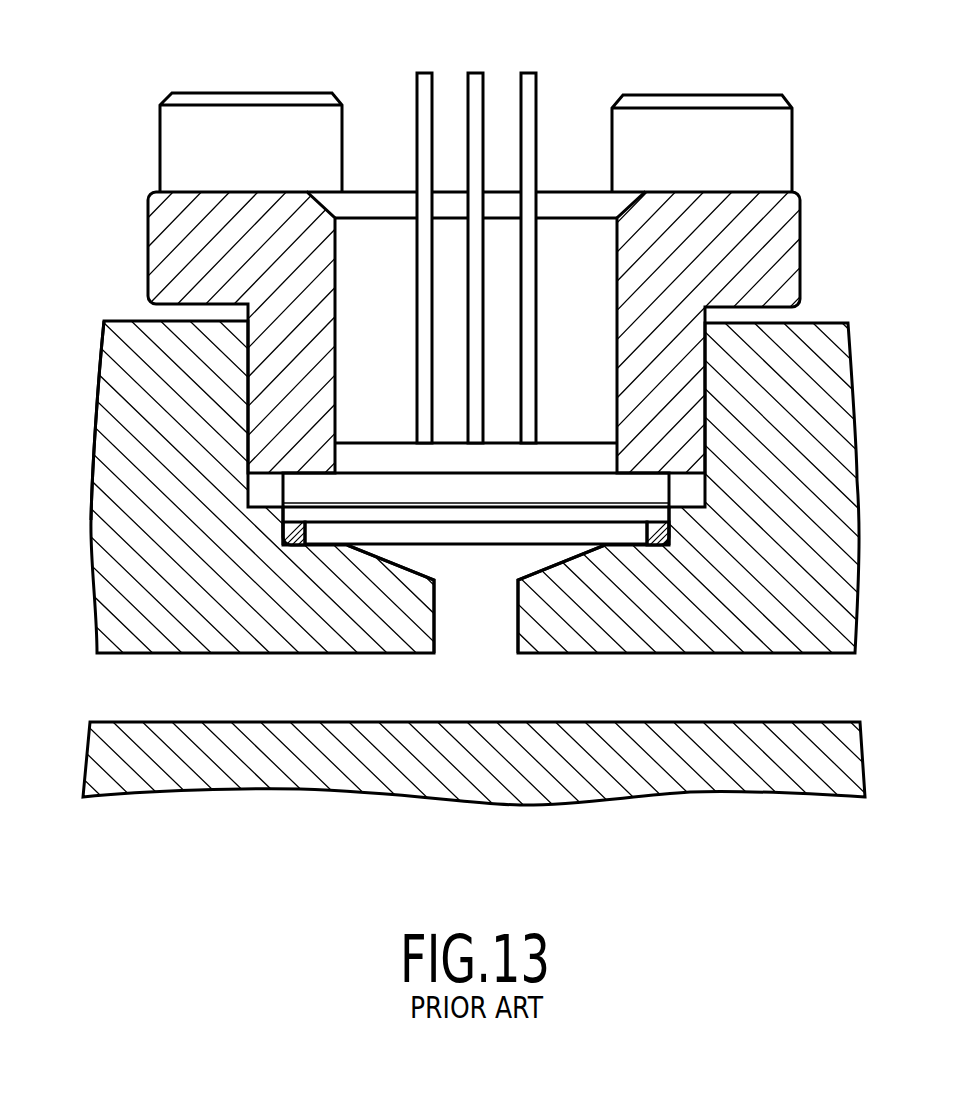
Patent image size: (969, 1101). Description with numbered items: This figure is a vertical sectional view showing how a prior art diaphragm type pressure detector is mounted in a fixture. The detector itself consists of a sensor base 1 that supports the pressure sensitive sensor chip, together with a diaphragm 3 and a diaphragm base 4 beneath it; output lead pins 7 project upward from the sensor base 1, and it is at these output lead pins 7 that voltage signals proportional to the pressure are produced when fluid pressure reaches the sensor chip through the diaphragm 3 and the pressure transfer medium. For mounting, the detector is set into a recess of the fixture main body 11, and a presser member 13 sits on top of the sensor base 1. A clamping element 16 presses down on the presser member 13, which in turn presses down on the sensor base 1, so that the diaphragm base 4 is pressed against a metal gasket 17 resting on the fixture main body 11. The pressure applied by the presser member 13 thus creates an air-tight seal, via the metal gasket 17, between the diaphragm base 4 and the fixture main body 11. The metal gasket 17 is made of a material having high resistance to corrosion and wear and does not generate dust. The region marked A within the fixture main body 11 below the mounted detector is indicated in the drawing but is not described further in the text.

The sensor base 1 is at (627, 495).
The diaphragm 3 is at (465, 549).
The diaphragm base 4 is at (587, 533).
The output lead pins 7 is at (542, 97).
The fixture main body 11 is at (808, 563).
The presser member 13 is at (788, 270).
The clamping element 16 is at (773, 150).
The metal gasket 17 is at (284, 532).
The region A is at (217, 588).